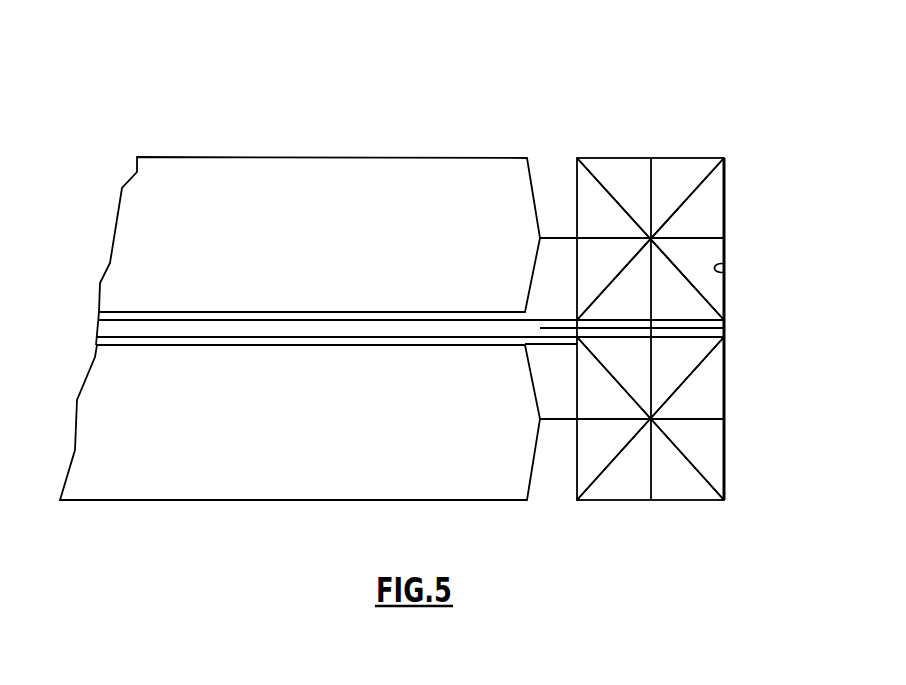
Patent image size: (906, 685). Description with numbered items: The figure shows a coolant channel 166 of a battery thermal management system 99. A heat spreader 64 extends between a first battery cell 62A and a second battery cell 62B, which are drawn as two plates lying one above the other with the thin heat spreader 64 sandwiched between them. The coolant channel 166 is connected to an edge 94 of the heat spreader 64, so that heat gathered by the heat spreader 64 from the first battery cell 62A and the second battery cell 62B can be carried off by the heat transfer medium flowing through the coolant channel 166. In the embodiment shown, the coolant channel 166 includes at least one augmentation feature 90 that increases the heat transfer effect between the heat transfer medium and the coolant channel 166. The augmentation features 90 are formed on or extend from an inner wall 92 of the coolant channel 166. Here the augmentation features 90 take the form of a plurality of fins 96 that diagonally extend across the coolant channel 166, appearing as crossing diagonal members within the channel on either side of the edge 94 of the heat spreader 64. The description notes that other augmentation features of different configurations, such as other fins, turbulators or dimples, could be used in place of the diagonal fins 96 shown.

The battery thermal management system 99 is at (490, 87).
The first battery cell 62A is at (166, 221).
The second battery cell 62B is at (126, 429).
The heat spreader 64 is at (346, 314).
The augmentation feature 90 is at (677, 176).
The fins 96 is at (673, 212).
The coolant channel 166 is at (726, 215).
The inner wall 92 is at (725, 268).
The edge 94 is at (696, 342).